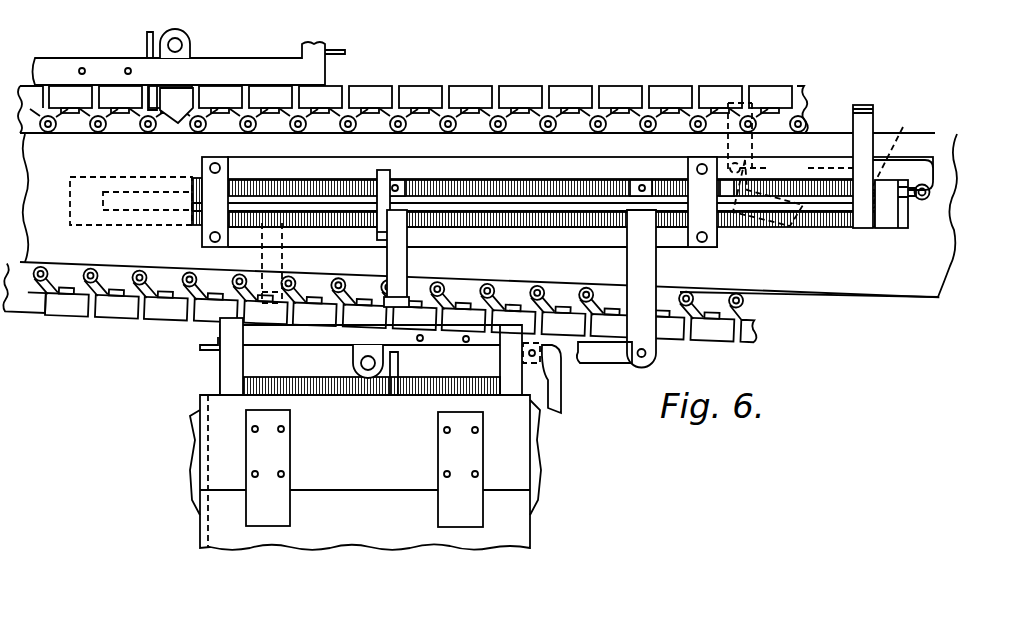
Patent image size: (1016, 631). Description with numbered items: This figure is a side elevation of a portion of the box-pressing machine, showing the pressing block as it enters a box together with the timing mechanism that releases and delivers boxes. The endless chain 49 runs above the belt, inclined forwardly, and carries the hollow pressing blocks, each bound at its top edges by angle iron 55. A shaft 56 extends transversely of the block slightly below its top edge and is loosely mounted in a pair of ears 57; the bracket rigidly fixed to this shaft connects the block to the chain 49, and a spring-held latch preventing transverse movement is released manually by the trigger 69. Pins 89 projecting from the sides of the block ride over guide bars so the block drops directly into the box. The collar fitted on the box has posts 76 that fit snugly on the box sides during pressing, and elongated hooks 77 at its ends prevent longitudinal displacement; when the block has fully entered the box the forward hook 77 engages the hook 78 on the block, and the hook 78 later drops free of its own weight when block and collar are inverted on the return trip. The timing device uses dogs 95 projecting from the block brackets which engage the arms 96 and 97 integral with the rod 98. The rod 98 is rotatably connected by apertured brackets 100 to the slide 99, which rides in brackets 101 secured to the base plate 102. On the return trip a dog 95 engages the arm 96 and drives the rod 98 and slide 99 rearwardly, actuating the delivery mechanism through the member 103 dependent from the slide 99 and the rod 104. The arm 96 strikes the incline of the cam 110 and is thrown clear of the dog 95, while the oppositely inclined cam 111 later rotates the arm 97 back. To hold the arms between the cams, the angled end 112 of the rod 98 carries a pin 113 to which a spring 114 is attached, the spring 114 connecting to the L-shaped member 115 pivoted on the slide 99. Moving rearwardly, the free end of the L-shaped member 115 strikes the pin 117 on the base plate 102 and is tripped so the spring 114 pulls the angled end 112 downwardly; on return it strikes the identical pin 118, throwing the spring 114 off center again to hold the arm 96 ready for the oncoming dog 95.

The endless chain 49 is at (530, 88).
The angle iron 55 is at (258, 66).
The shaft 56 is at (177, 38).
The ears 57 is at (192, 40).
The trigger 69 is at (150, 32).
The posts 76 is at (291, 513).
The elongated hooks 77 is at (196, 494).
The hook 78 is at (557, 398).
The pins 89 is at (127, 69).
The dogs 95 is at (174, 126).
The arm 96 is at (862, 109).
The arm 97 is at (262, 264).
The rod 98 is at (156, 223).
The slide 99 is at (92, 223).
The apertured brackets 100 is at (380, 181).
The brackets 101 is at (230, 163).
The base plate 102 is at (521, 154).
The member 103 is at (657, 268).
The rod 104 is at (615, 360).
The cam 110 is at (722, 167).
The cam 111 is at (382, 239).
The angled end 112 is at (900, 227).
The pin 113 is at (930, 196).
The spring 114 is at (930, 186).
The L-shaped member 115 is at (799, 168).
The pin 117 is at (747, 163).
The pin 118 is at (889, 167).